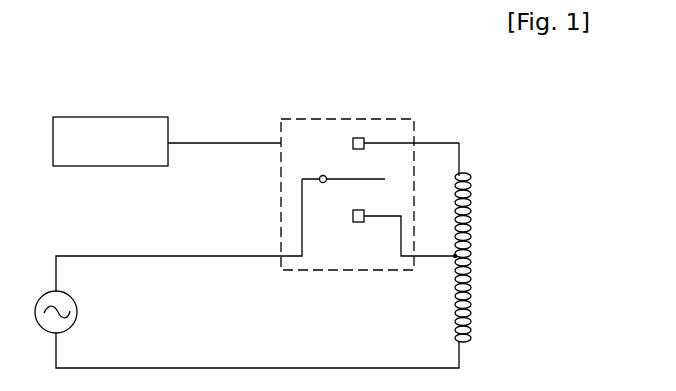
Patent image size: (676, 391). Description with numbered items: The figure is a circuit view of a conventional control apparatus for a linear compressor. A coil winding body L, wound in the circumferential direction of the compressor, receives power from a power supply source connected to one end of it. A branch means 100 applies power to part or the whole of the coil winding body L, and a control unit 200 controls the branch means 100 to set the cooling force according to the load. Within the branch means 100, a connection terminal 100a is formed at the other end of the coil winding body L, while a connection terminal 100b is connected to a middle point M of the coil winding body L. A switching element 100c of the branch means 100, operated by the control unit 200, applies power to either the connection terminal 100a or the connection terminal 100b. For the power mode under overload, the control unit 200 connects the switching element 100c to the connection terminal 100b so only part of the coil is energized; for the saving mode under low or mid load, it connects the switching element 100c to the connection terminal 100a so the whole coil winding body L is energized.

The control unit 200 is at (128, 117).
The branch means 100 is at (410, 119).
The connection terminal 100a is at (358, 138).
The connection terminal 100b is at (358, 222).
The switching element 100c is at (323, 175).
The middle point M is at (447, 267).
The coil winding body L is at (471, 178).